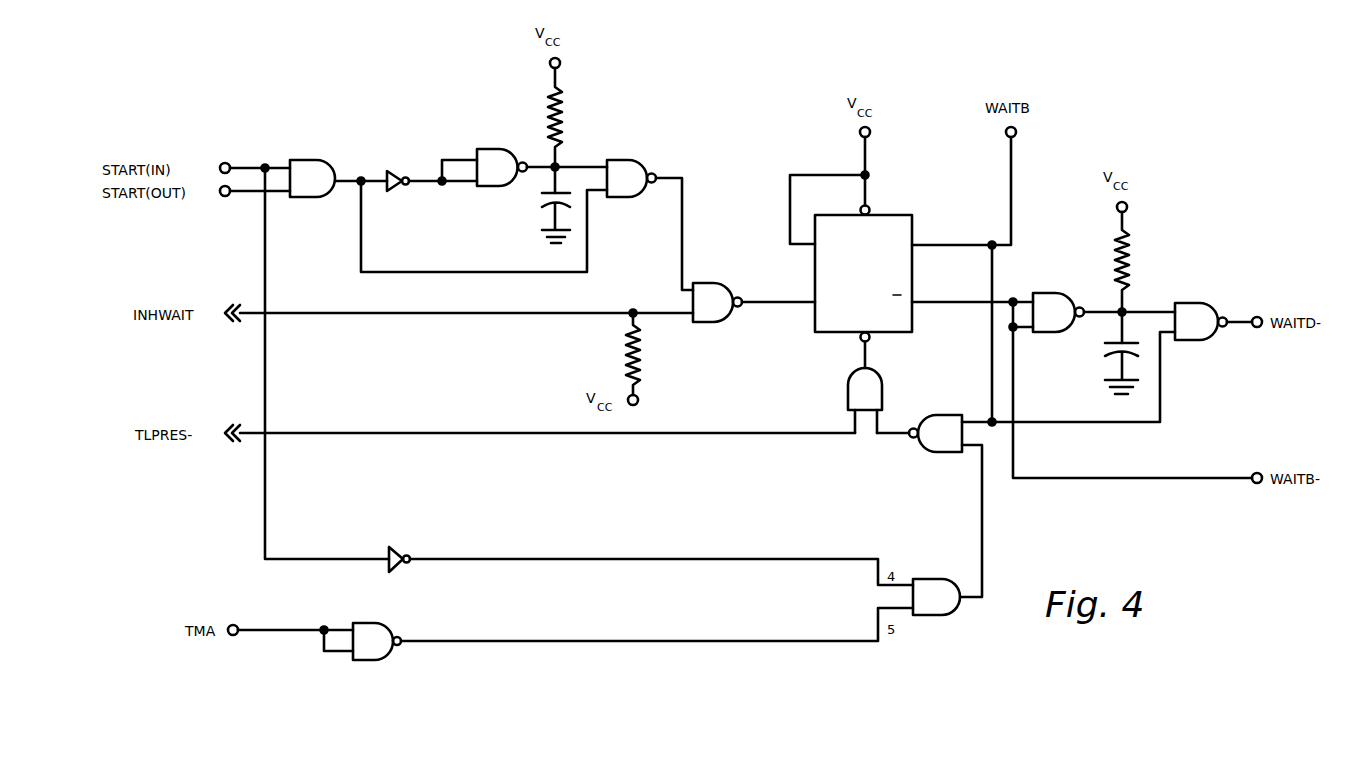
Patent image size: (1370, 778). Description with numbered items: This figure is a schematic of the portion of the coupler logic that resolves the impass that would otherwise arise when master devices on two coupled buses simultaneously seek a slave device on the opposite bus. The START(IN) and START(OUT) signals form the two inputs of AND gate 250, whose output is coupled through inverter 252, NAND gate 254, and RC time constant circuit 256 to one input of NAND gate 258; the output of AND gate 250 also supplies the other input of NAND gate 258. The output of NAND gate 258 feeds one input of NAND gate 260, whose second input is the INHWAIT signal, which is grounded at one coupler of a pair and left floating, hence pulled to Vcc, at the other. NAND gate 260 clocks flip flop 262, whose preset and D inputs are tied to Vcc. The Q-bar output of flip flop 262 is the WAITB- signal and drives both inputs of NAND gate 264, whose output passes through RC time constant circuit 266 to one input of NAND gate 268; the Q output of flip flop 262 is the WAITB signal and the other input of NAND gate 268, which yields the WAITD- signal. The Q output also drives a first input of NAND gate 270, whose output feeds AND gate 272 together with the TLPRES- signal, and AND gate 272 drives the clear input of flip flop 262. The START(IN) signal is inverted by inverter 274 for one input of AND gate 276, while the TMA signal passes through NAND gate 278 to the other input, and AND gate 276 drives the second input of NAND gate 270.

The AND gate 250 is at (310, 160).
The inverter 252 is at (398, 172).
The NAND gate 254 is at (497, 158).
The RC time constant circuit 256 is at (620, 111).
The NAND gate 258 is at (633, 160).
The NAND gate 260 is at (720, 291).
The flip flop 262 is at (892, 333).
The NAND gate 264 is at (1050, 297).
The RC time constant circuit 266 is at (1195, 262).
The NAND gate 268 is at (1198, 305).
The NAND gate 270 is at (942, 418).
The AND gate 272 is at (846, 396).
The inverter 274 is at (396, 551).
The AND gate 276 is at (935, 585).
The NAND gate 278 is at (376, 626).